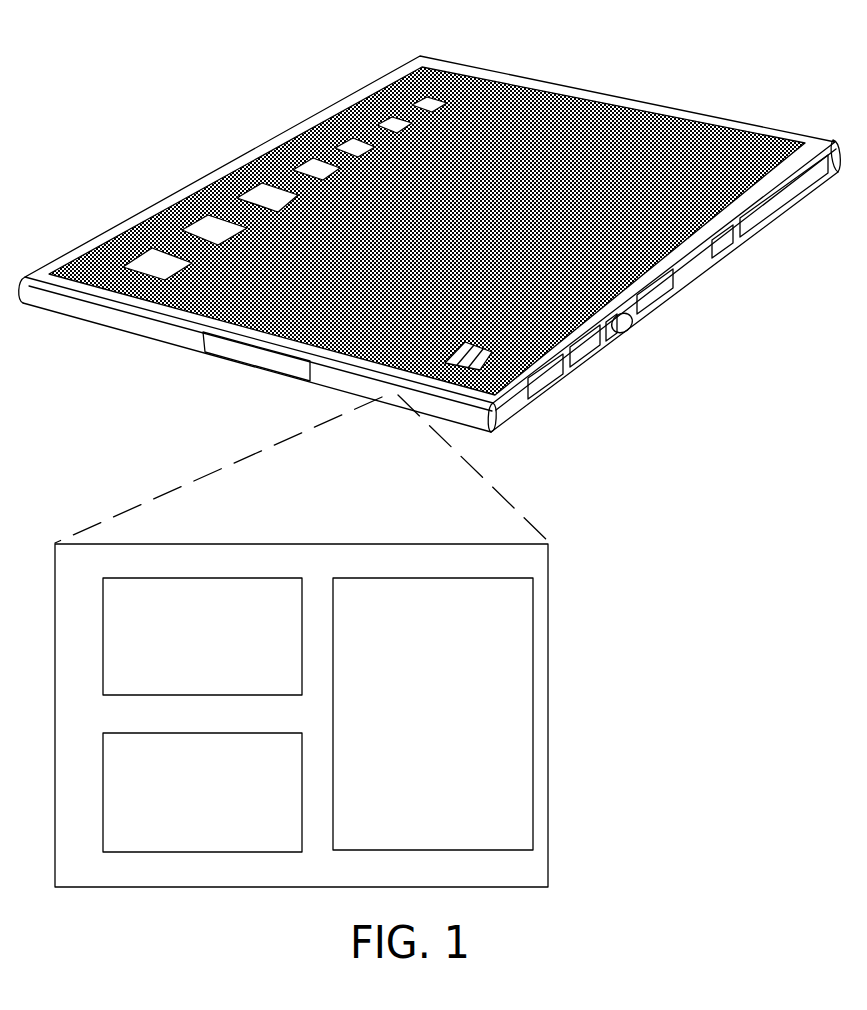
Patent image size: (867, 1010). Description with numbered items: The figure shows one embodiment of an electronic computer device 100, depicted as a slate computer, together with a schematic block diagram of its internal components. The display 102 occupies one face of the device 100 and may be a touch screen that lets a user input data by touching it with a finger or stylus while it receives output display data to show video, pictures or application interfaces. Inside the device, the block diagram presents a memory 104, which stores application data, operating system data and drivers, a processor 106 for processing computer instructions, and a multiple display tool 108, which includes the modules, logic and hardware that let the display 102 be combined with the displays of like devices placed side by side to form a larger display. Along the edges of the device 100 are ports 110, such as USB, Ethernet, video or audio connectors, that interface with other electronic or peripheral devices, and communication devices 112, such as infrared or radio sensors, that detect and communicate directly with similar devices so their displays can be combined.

The electronic computer device 100 is at (148, 116).
The display 102 is at (557, 127).
The memory 104 is at (183, 673).
The processor 106 is at (183, 826).
The multiple display tool 108 is at (414, 765).
The ports 110 is at (787, 193).
The communication devices 112 is at (258, 356).